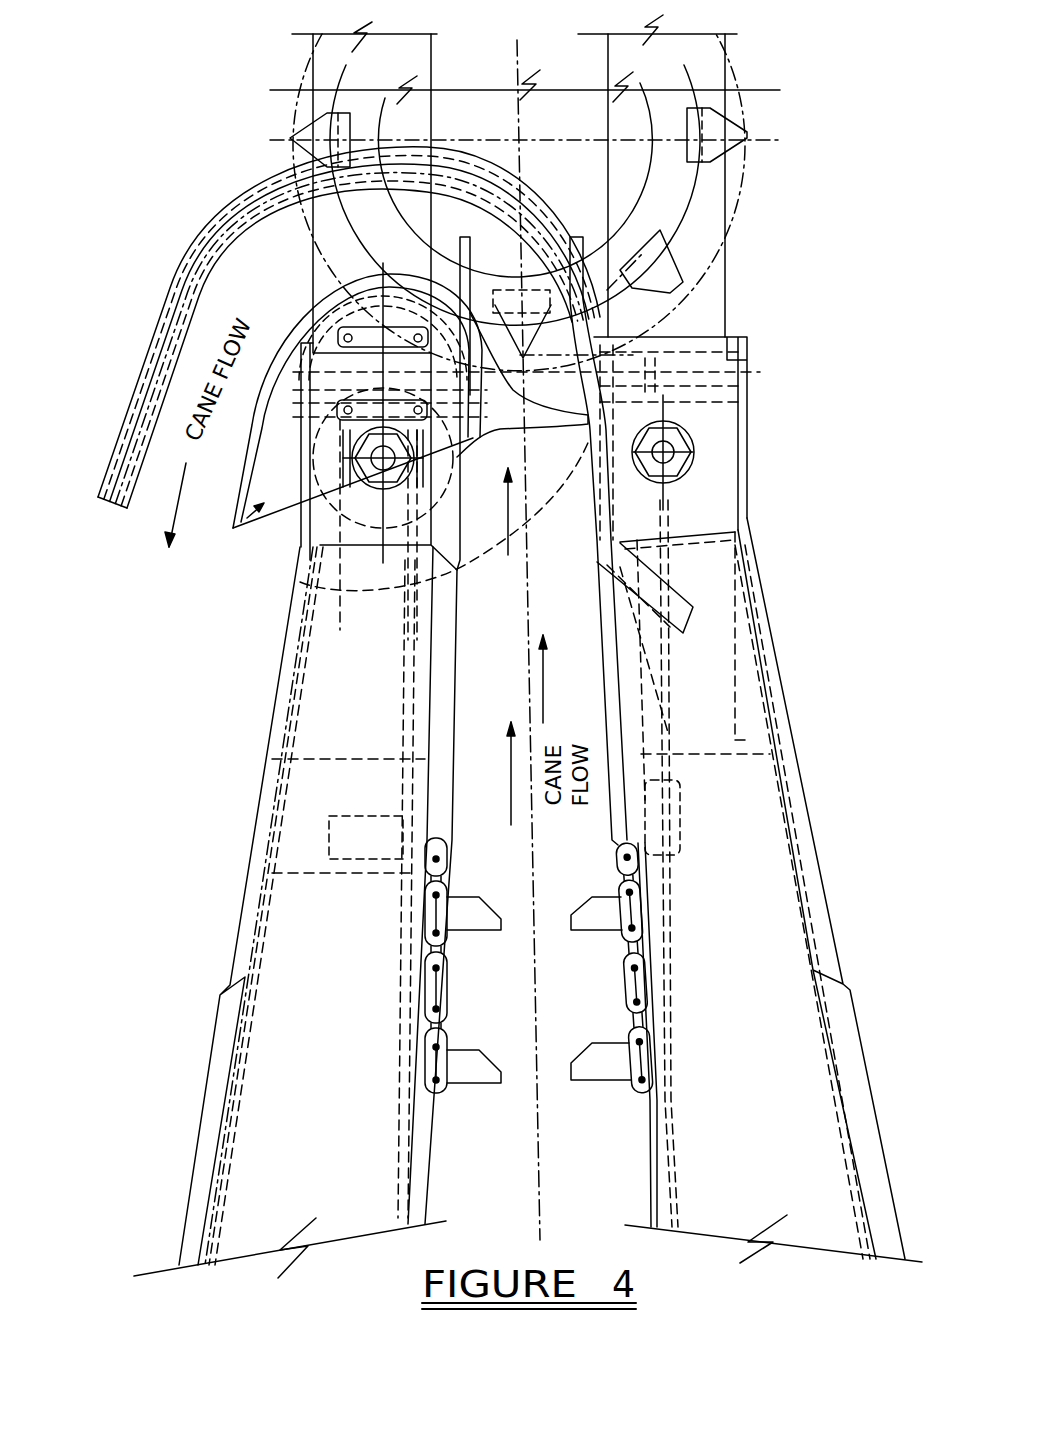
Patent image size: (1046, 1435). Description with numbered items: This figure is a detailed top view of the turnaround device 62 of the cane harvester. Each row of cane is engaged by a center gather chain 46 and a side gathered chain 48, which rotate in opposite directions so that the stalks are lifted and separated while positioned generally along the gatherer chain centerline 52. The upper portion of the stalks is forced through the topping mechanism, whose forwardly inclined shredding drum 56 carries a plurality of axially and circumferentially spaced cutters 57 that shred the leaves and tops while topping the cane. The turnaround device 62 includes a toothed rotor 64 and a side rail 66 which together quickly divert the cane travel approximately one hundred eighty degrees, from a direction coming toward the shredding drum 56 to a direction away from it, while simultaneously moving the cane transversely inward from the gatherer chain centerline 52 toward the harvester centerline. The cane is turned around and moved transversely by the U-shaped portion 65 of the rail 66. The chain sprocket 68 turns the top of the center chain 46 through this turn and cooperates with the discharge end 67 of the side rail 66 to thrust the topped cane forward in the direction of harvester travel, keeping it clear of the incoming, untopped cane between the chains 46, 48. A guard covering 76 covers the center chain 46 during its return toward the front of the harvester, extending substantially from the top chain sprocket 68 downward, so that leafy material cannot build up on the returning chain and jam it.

The center gather chain 46 is at (441, 878).
The side gathered chain 48 is at (625, 1001).
The gatherer chain centerline 52 is at (540, 1121).
The shredding drum 56 is at (697, 227).
The cutter 57 is at (733, 120).
The turnaround device 62 is at (341, 496).
The toothed rotor 64 is at (233, 528).
The U-shaped portion 65 is at (565, 215).
The side rail 66 is at (200, 186).
The discharge end 67 is at (112, 441).
The chain sprocket 68 is at (337, 507).
The guard covering 76 is at (258, 795).